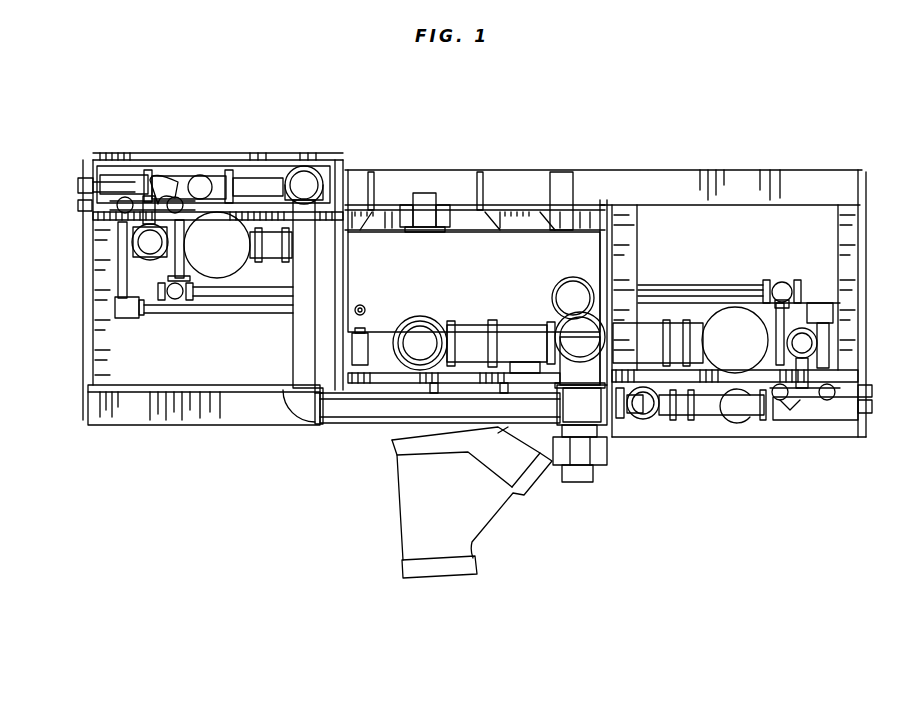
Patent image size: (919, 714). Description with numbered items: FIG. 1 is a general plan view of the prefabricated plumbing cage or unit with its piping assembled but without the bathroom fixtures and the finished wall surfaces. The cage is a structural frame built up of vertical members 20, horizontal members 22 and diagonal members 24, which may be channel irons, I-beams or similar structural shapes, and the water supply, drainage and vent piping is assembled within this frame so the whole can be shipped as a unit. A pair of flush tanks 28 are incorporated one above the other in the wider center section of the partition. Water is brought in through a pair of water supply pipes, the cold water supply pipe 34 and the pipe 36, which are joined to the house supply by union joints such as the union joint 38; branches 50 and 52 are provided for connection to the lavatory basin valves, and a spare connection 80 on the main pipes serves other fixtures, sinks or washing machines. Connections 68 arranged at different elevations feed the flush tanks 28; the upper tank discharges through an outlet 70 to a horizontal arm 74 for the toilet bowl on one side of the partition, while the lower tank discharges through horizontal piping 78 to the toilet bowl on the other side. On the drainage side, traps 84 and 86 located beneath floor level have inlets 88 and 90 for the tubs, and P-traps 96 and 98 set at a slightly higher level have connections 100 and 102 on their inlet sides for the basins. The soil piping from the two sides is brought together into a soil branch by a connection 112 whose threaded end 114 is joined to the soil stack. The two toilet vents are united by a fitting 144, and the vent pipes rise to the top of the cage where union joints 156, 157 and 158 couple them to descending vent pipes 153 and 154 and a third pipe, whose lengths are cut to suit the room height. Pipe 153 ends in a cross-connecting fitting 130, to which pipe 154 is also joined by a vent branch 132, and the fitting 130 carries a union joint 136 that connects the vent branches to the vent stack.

The vertical members 20 is at (93, 172).
The horizontal members 22 is at (115, 153).
The diagonal members 24 is at (100, 222).
The flush tanks 28 is at (474, 282).
The cold water supply pipe 34 is at (240, 296).
The water supply pipe 36 is at (212, 312).
The union joint 38 is at (800, 283).
The branch 50 is at (78, 186).
The branch 52 is at (78, 207).
The connections 68 is at (364, 307).
The outlet 70 is at (572, 280).
The horizontal arm 74 is at (510, 388).
The horizontal piping 78 is at (430, 192).
The spare connection 80 is at (158, 292).
The trap 84 is at (238, 245).
The trap 86 is at (690, 340).
The inlet 88 is at (145, 242).
The inlet 90 is at (818, 343).
The P-trap 96 is at (238, 175).
The P-trap 98 is at (726, 428).
The connection 100 is at (137, 172).
The connection 102 is at (822, 420).
The connection 112 is at (405, 526).
The threaded end 114 is at (456, 575).
The cross-connecting fitting 130 is at (582, 411).
The vent branch 132 is at (292, 356).
The union joint 136 is at (598, 470).
The fitting 144 is at (515, 322).
The vent pipe 153 is at (380, 423).
The vent pipe 154 is at (566, 178).
The union joint 156 is at (558, 318).
The union joint 157 is at (300, 168).
The union joint 158 is at (658, 420).